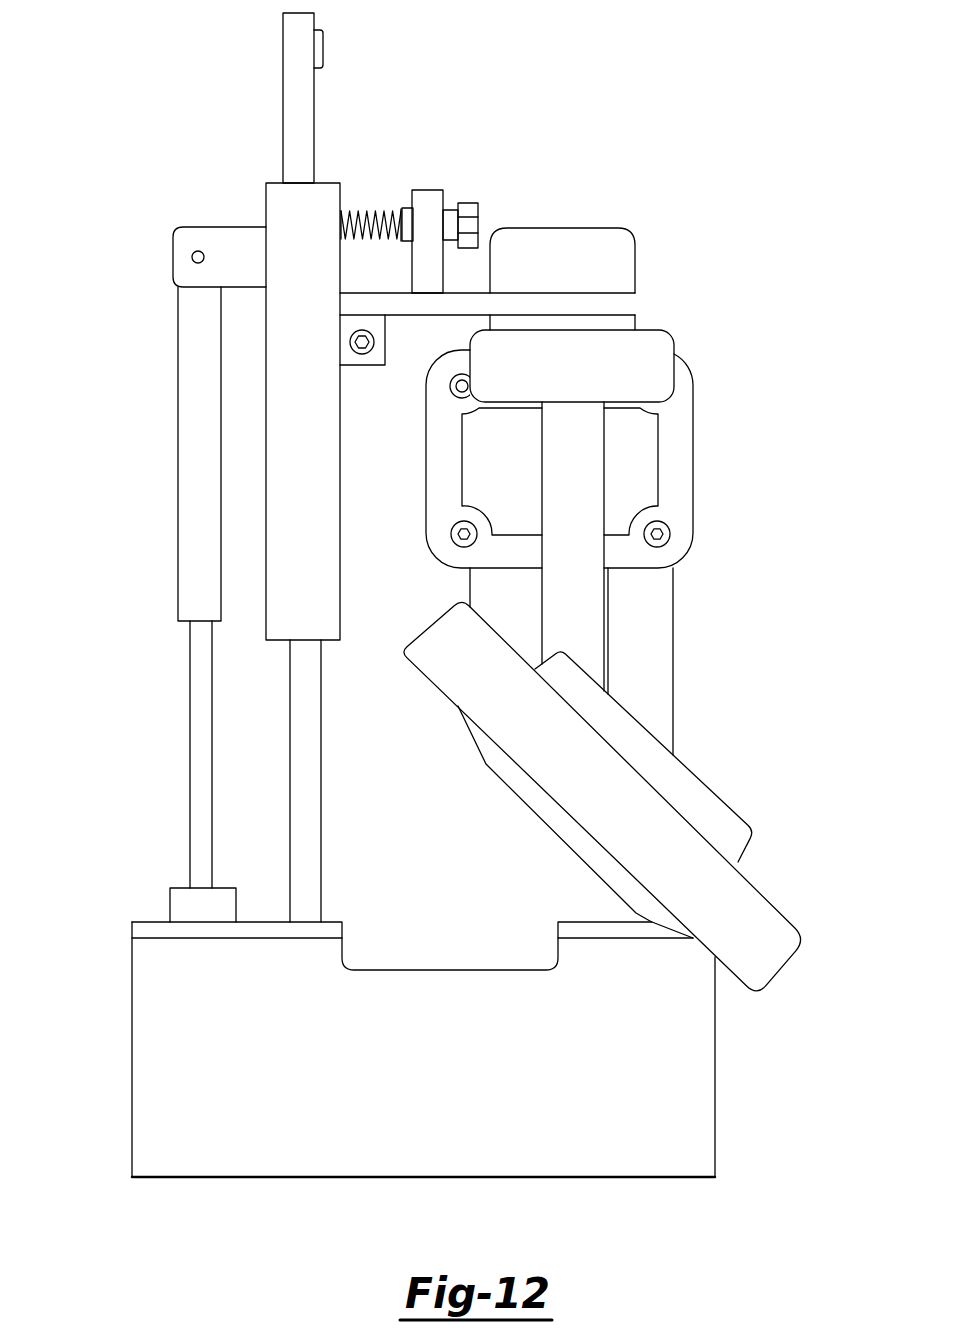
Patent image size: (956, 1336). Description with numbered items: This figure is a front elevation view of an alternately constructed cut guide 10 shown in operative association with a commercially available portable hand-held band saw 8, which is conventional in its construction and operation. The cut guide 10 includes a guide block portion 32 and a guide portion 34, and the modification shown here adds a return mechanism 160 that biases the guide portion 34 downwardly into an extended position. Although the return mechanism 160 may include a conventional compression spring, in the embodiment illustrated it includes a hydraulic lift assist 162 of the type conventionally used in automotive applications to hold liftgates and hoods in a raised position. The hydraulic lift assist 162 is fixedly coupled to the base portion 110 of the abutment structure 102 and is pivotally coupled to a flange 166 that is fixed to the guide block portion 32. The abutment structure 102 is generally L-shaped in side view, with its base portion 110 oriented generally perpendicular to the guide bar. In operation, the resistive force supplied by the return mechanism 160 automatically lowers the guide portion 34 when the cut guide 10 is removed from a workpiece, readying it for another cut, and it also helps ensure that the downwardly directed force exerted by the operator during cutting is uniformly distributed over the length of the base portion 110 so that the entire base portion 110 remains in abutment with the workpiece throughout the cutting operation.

The portable hand-held band saw 8 is at (718, 453).
The cut guide 10 is at (550, 189).
The guide block portion 32 is at (345, 490).
The guide portion 34 is at (332, 812).
The abutment structure 102 is at (110, 1055).
The base portion 110 is at (152, 925).
The return mechanism 160 is at (164, 533).
The hydraulic lift assist 162 is at (195, 404).
The flange 166 is at (237, 242).